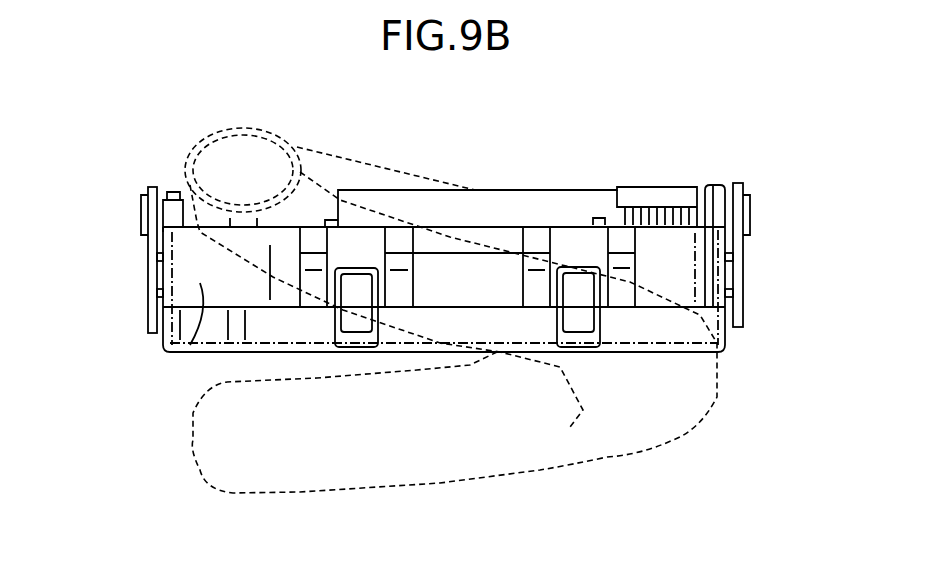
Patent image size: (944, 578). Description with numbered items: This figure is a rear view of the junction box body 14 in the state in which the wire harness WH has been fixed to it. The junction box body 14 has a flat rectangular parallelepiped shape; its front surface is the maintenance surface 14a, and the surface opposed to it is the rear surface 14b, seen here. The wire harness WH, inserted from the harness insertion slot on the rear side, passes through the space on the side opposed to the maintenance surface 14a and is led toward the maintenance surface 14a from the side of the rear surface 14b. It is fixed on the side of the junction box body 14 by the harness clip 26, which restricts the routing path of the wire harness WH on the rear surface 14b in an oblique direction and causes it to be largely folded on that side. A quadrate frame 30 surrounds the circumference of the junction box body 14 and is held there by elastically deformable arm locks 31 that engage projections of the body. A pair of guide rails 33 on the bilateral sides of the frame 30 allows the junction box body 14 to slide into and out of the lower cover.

The junction box body 14 is at (603, 188).
The maintenance surface 14a is at (518, 190).
The rear surface 14b is at (463, 320).
The harness clip 26 is at (198, 142).
The wire harness WH is at (378, 160).
The frame 30 is at (675, 240).
The arm lock 31 is at (360, 348).
The guide rail 33 is at (150, 270).